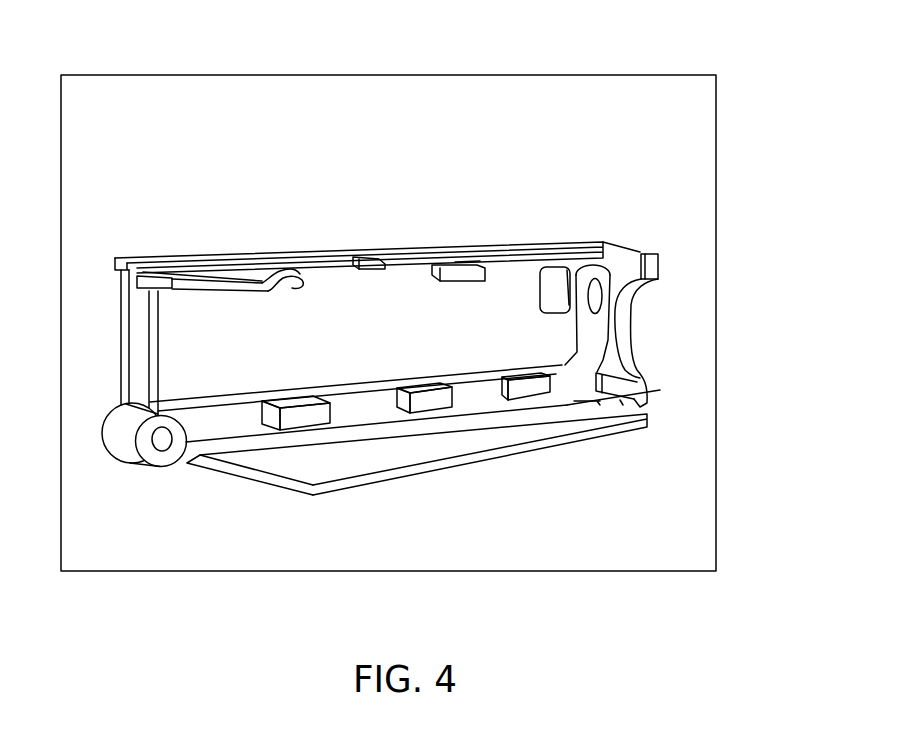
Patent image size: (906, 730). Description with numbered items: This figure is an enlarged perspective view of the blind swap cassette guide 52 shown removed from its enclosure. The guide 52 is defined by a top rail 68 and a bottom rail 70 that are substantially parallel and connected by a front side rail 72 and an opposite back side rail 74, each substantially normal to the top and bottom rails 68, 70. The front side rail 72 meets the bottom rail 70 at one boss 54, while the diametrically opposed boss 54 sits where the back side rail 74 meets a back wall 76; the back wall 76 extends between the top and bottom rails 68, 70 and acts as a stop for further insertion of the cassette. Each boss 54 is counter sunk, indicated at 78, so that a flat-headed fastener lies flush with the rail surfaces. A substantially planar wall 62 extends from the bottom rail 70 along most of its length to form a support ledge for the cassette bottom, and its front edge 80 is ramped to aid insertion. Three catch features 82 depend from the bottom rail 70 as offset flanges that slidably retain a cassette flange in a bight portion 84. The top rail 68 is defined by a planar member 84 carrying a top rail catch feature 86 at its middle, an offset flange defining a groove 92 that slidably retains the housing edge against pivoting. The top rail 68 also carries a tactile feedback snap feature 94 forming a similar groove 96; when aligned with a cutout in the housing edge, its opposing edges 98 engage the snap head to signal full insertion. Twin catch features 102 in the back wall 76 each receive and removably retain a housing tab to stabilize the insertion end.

The guide 52 is at (474, 588).
The boss 54 is at (555, 285).
The wall 62 is at (365, 480).
The top rail 68 is at (343, 250).
The bottom rail 70 is at (220, 432).
The front side rail 72 is at (120, 336).
The back side rail 74 is at (600, 327).
The back wall 76 is at (618, 362).
The counter sunk portion 78 is at (640, 253).
The front edge 80 is at (283, 418).
The catch features 82 is at (433, 405).
The planar member 84 is at (398, 259).
The top rail catch feature 86 is at (447, 273).
The groove 92 is at (467, 263).
The tactile feedback snap feature 94 is at (300, 260).
The groove 96 is at (135, 283).
The opposing edges 98 is at (297, 272).
The twin catch features 102 is at (658, 270).